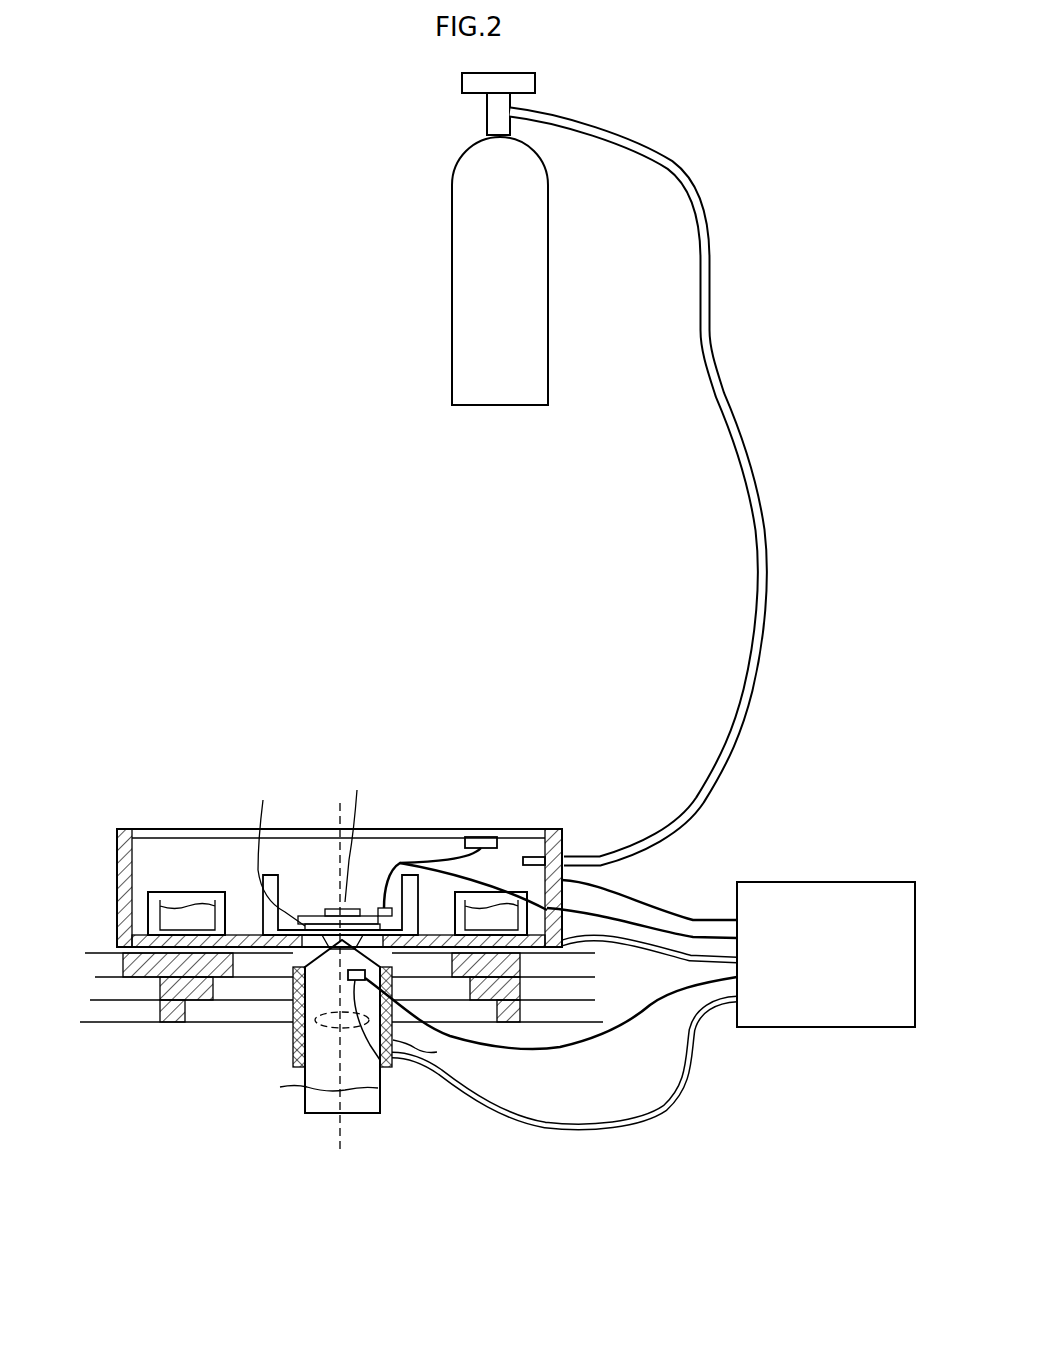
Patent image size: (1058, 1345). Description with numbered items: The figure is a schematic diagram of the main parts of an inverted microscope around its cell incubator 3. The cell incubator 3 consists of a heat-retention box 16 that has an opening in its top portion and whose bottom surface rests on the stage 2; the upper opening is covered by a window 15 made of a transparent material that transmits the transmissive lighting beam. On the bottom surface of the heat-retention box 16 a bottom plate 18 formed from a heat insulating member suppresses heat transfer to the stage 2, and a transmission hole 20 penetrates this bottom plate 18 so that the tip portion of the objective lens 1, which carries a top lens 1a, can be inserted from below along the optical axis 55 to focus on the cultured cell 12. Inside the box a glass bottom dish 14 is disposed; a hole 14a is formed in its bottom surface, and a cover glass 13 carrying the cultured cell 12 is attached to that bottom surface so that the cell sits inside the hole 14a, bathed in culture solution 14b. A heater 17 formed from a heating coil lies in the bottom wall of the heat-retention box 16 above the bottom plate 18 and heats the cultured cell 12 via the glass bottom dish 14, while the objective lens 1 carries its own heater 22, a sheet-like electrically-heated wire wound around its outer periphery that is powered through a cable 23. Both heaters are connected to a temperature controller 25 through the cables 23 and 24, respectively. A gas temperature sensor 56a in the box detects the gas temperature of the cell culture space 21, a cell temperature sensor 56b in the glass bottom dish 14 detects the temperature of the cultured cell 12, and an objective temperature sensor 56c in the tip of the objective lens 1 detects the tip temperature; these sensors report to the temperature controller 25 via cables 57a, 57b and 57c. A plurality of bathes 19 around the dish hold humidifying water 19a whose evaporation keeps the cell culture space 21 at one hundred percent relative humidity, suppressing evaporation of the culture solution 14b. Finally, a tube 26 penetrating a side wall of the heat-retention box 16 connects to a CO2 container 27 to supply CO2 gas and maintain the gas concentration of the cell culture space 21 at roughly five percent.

The objective lens 1 is at (313, 1108).
The top lens 1a is at (352, 908).
The stage 2 is at (107, 1012).
The cell incubator 3 is at (540, 822).
The cultured cell 12 is at (332, 905).
The cover glass 13 is at (283, 903).
The glass bottom dish 14 is at (410, 878).
The hole 14a is at (359, 830).
The culture solution 14b is at (274, 849).
The window 15 is at (211, 834).
The heat-retention box 16 is at (117, 854).
The heater 17 is at (128, 953).
The bottom plate 18 is at (130, 955).
The bathes 19 is at (160, 911).
The humidifying water 19a is at (175, 921).
The transmission hole 20 is at (290, 970).
The cell culture space 21 is at (172, 848).
The heater 22 is at (434, 1055).
The cable 23 is at (652, 1113).
The cable 24 is at (623, 944).
The temperature controller 25 is at (845, 1028).
The tube 26 is at (762, 470).
The CO2 container 27 is at (452, 331).
The optical axis 55 is at (311, 1026).
The gas temperature sensor 56a is at (490, 832).
The cell temperature sensor 56b is at (398, 863).
The objective temperature sensor 56c is at (392, 1068).
The cable 57a is at (668, 872).
The cable 57b is at (695, 920).
The cable 57c is at (643, 1020).